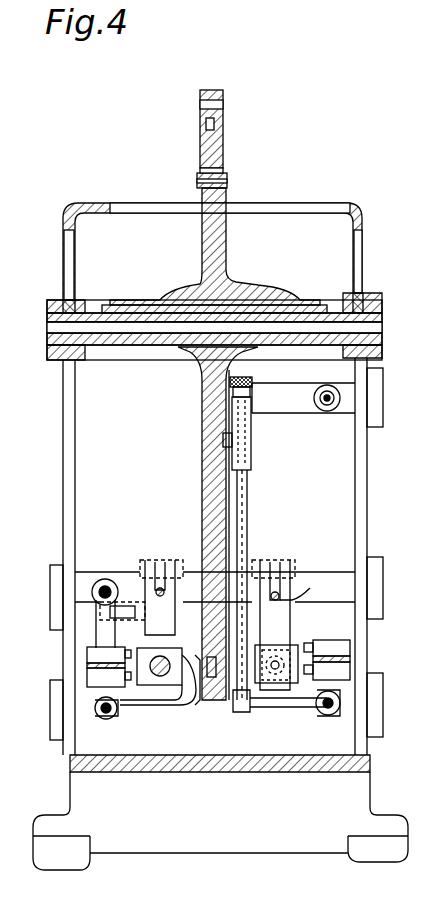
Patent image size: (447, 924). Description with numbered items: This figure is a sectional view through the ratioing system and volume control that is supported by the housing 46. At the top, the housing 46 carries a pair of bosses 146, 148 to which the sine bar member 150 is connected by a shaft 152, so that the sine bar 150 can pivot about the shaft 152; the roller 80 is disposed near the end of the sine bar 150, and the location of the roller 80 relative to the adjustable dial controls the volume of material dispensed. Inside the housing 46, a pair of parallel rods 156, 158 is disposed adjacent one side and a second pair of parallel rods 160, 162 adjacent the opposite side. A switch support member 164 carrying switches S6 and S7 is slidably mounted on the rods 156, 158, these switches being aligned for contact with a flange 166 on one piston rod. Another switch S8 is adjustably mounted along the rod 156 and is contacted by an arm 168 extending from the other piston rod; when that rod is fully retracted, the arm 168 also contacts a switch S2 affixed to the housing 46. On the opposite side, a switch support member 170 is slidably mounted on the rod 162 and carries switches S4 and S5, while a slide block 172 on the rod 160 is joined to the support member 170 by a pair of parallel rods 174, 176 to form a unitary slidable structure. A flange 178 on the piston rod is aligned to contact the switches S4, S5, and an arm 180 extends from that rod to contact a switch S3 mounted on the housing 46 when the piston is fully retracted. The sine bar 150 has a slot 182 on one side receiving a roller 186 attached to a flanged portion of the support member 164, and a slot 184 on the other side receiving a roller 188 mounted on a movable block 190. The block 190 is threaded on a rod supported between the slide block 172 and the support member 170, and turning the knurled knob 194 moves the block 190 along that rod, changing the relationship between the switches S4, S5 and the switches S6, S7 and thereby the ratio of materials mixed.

The housing 46 is at (353, 213).
The roller 80 is at (205, 90).
The boss 146 is at (75, 303).
The boss 148 is at (343, 298).
The sine bar member 150 is at (227, 258).
The shaft 152 is at (157, 320).
The rod 156 is at (118, 580).
The rod 158 is at (106, 719).
The rod 160 is at (327, 411).
The rod 162 is at (325, 716).
The switch support member 164 is at (94, 595).
The flange 166 is at (150, 686).
The arm 168 is at (180, 706).
The switch support member 170 is at (292, 772).
The slide block 172 is at (282, 414).
The rod 174 is at (247, 508).
The rod 176 is at (250, 508).
The flange 178 is at (292, 640).
The arm 180 is at (300, 580).
The slot 182 is at (280, 715).
The slot 184 is at (226, 474).
The roller 186 is at (214, 700).
The roller 188 is at (222, 438).
The movable block 190 is at (251, 452).
The knurled knob 194 is at (246, 377).
The switch S2 is at (163, 562).
The switch S3 is at (275, 560).
The switch S4 is at (350, 672).
The switch S5 is at (348, 647).
The switch S6 is at (88, 678).
The switch S7 is at (88, 652).
The switch S8 is at (105, 614).